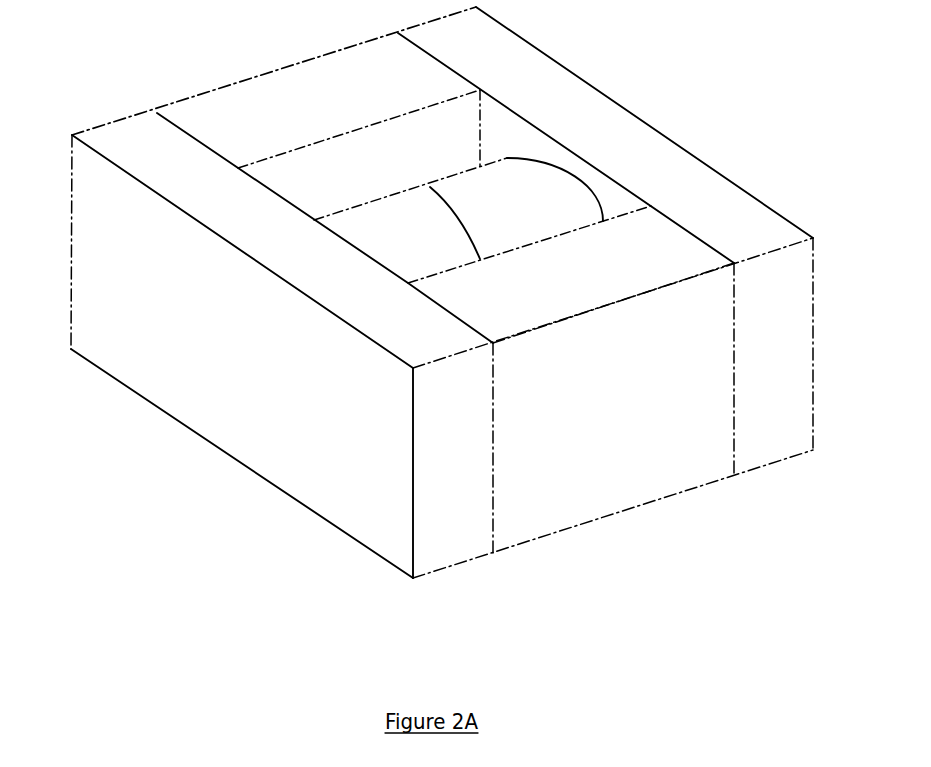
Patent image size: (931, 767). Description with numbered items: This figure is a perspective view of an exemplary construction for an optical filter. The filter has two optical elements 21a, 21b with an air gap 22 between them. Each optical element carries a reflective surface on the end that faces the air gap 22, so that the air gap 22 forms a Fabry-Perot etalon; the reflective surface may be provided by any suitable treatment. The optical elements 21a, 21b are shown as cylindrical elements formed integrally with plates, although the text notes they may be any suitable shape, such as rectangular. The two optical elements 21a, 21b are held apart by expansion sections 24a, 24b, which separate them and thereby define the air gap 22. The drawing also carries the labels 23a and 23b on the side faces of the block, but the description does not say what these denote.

The expansion section 24a is at (182, 99).
The right rear rim portion of block 23b is at (643, 122).
The optical element 21a is at (365, 207).
The optical element 21b is at (468, 172).
The air gap 22 is at (430, 193).
The left front face of block 23a is at (207, 443).
The expansion section 24b is at (657, 502).